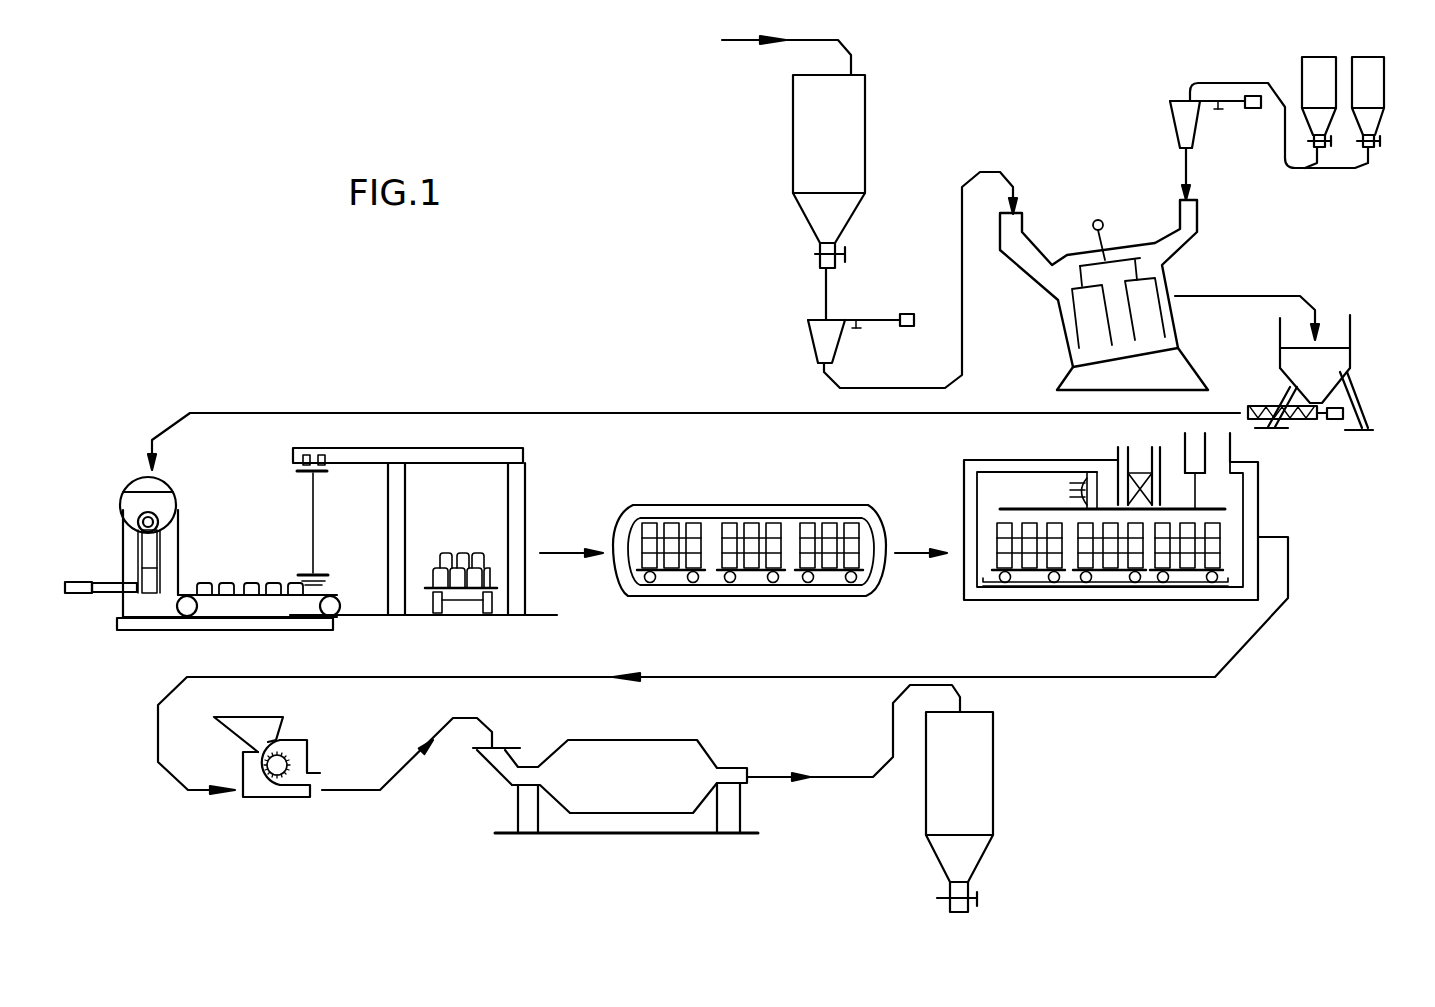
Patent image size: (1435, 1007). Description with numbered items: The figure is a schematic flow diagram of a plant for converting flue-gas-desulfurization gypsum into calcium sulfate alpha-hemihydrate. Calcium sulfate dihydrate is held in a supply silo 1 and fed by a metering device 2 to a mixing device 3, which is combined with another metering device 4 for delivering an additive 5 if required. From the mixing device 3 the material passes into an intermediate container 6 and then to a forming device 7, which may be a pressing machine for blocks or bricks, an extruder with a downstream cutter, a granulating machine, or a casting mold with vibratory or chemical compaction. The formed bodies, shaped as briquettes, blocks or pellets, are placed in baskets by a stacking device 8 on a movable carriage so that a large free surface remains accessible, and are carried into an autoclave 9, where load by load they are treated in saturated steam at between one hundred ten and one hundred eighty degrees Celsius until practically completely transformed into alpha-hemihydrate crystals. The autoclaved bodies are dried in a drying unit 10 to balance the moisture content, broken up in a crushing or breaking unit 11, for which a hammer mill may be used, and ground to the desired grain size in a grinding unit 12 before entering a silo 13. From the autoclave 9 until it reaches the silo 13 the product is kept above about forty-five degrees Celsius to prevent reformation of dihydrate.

The supply silo 1 is at (818, 133).
The metering device 2 is at (775, 318).
The mixing device 3 is at (1068, 220).
The metering device 4 is at (1137, 100).
The additive 5 is at (1335, 78).
The intermediate container 6 is at (1323, 370).
The forming device 7 is at (111, 463).
The stacking device 8 is at (555, 481).
The autoclave 9 is at (761, 508).
The drying unit 10 is at (1310, 486).
The crushing or breaking unit 11 is at (260, 830).
The grinding unit 12 is at (731, 739).
The silo 13 is at (975, 779).